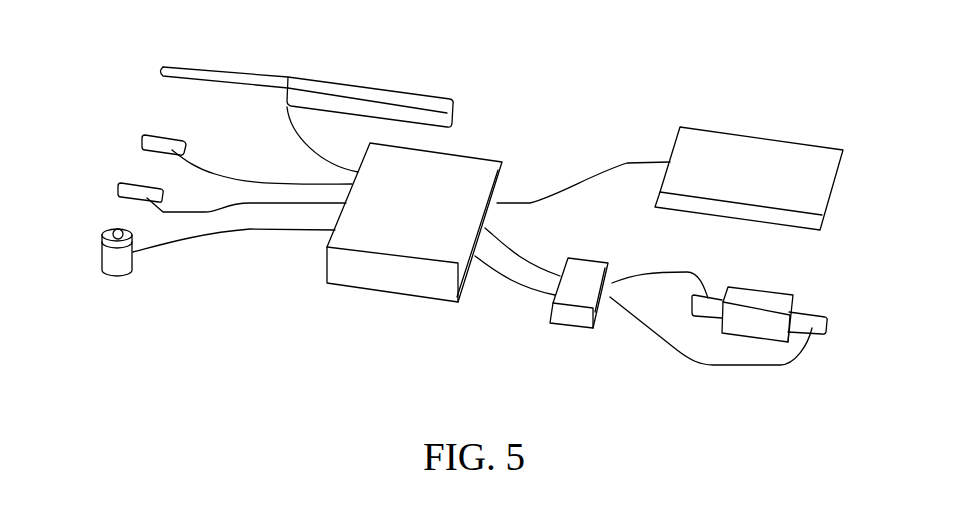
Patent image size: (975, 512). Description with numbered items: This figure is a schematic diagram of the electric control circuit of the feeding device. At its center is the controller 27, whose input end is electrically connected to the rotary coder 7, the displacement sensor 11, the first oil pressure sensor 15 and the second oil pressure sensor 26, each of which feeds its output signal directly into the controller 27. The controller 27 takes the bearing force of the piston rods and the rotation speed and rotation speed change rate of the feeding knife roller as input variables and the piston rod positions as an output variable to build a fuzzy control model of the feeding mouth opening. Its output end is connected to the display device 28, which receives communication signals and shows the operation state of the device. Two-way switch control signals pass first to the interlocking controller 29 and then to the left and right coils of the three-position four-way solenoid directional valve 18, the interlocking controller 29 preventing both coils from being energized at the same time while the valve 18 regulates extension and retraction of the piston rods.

The rotary coder 7 is at (115, 263).
The displacement sensor 11 is at (343, 87).
The first oil pressure sensor 15 is at (152, 138).
The three-position four-way solenoid directional valve 18 is at (767, 308).
The second oil pressure sensor 26 is at (127, 185).
The controller 27 is at (447, 168).
The display device 28 is at (727, 160).
The interlocking controller 29 is at (552, 312).